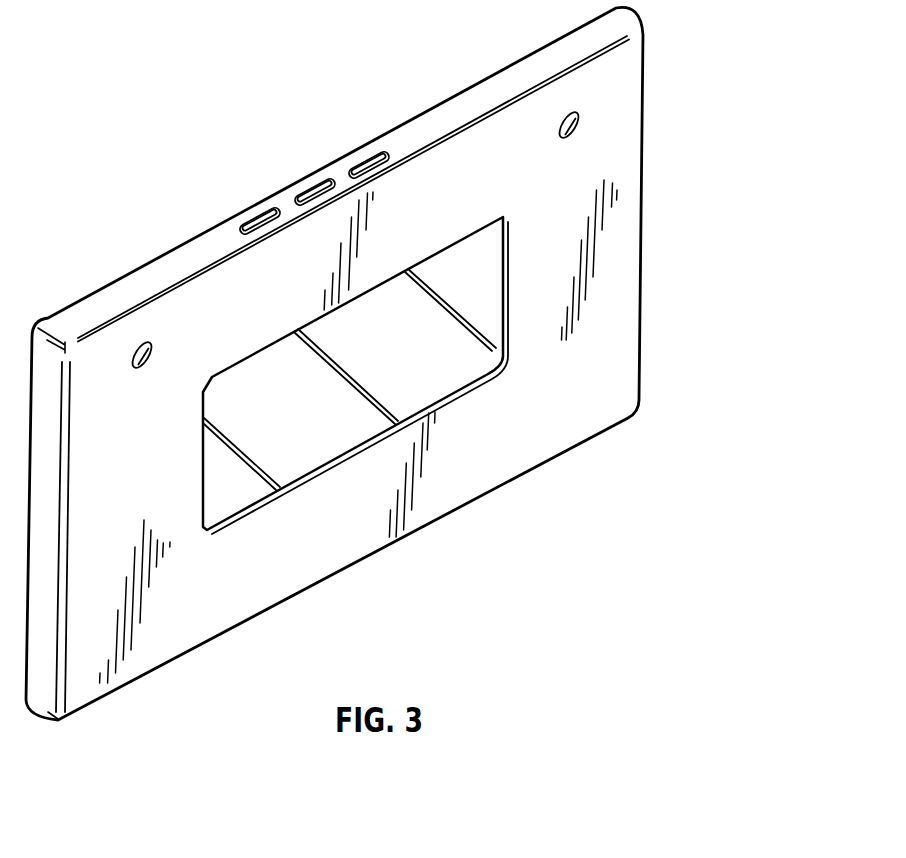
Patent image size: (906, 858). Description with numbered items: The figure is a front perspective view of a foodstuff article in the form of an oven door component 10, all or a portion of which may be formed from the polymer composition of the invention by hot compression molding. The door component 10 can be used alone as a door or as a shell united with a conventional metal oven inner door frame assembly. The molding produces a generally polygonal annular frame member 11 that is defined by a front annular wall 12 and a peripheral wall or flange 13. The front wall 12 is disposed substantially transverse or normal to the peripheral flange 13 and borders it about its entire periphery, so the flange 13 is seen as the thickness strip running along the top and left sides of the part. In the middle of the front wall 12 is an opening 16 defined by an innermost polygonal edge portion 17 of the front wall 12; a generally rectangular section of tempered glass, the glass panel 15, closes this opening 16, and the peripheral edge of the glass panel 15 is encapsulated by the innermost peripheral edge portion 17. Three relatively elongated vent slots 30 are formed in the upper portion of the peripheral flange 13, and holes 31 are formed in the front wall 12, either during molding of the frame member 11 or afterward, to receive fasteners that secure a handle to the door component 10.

The oven door component 10 is at (421, 360).
The annular frame member 11 is at (643, 143).
The front annular wall 12 is at (472, 196).
The peripheral wall or flange 13 is at (163, 270).
The glass panel 15 is at (327, 425).
The opening 16 is at (447, 378).
The innermost polygonal edge portion 17 is at (384, 285).
The vent slots 30 is at (303, 190).
The holes 31 is at (570, 138).